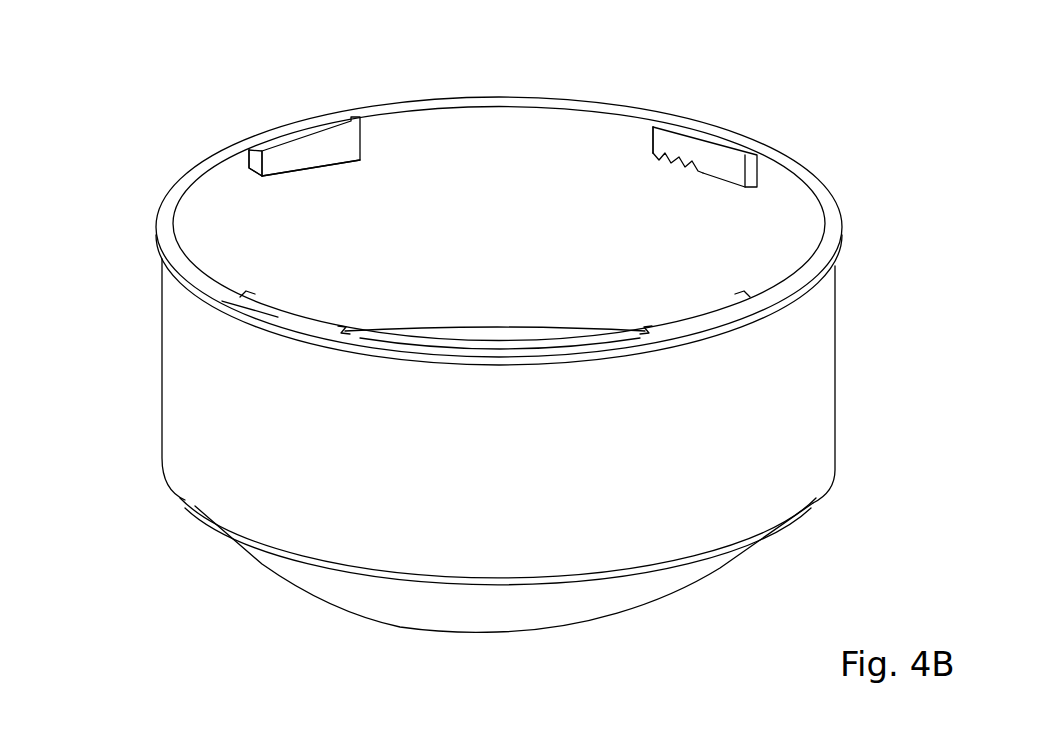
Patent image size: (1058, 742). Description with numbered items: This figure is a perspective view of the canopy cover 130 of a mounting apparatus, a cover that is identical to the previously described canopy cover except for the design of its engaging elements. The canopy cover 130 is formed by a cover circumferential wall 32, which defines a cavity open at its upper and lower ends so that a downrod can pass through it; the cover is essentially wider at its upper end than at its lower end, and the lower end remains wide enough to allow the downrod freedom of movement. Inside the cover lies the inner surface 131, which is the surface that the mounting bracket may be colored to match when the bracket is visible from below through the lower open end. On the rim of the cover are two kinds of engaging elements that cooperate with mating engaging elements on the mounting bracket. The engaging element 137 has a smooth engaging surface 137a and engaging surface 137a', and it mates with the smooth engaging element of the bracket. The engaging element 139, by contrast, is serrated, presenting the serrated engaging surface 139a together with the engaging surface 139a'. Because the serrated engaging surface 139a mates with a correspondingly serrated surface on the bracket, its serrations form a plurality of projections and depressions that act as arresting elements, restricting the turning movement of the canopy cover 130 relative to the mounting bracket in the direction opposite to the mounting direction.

The canopy cover 130 is at (820, 127).
The inner surface 131 is at (226, 302).
The engaging element 137 is at (320, 143).
The engaging surface 137a is at (374, 121).
The engaging surface 137a' is at (191, 161).
The engaging element 139 is at (707, 163).
The engaging surface 139a is at (798, 200).
The engaging surface 139a' is at (649, 103).
The cover circumferential wall 32 is at (777, 418).